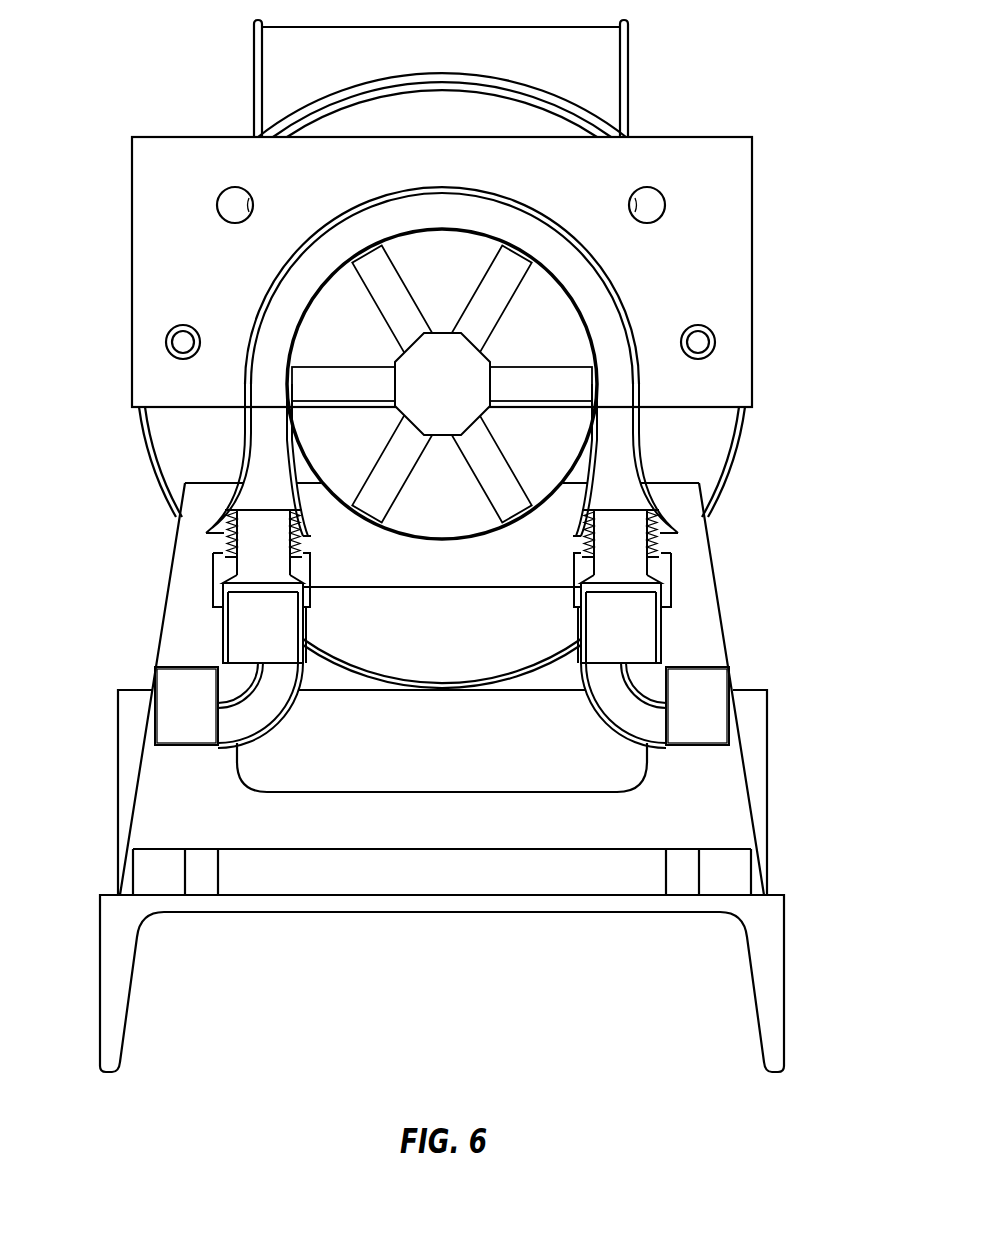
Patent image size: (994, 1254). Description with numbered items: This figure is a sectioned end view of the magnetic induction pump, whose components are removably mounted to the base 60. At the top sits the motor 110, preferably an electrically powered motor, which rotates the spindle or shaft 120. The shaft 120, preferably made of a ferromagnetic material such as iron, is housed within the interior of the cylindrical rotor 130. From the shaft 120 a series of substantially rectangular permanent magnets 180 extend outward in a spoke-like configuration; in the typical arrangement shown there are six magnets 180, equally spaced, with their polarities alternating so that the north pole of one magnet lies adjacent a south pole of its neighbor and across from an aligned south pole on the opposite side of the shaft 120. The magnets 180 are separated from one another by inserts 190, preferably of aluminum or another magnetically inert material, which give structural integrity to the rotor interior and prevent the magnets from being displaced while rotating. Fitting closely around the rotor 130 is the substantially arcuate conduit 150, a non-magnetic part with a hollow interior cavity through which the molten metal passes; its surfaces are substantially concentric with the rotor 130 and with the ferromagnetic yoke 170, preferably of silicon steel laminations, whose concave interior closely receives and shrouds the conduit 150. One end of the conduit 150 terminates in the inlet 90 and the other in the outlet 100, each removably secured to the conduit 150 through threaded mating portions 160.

The base 60 is at (778, 953).
The inlet 90 is at (728, 692).
The outlet 100 is at (152, 687).
The motor 110 is at (505, 112).
The shaft 120 is at (466, 401).
The rotor 130 is at (593, 337).
The conduit 150 is at (627, 475).
The threaded mating portions 160 is at (232, 553).
The yoke 170 is at (138, 283).
The permanent magnets 180 is at (345, 395).
The inserts 190 is at (466, 288).